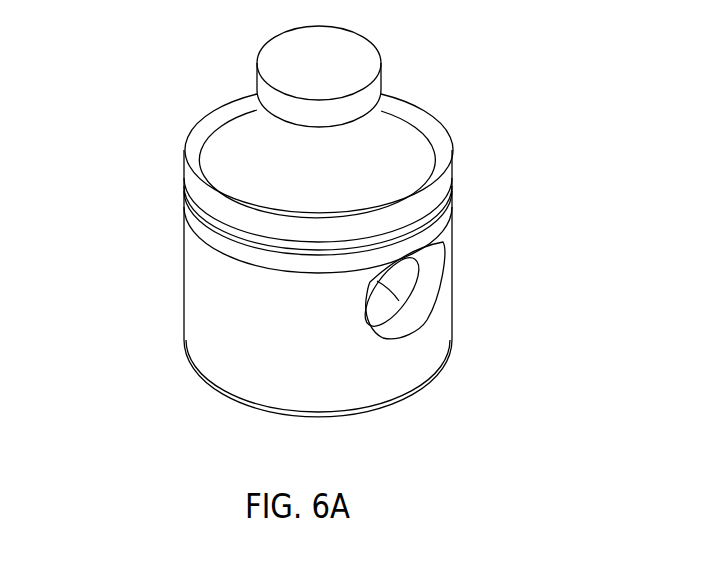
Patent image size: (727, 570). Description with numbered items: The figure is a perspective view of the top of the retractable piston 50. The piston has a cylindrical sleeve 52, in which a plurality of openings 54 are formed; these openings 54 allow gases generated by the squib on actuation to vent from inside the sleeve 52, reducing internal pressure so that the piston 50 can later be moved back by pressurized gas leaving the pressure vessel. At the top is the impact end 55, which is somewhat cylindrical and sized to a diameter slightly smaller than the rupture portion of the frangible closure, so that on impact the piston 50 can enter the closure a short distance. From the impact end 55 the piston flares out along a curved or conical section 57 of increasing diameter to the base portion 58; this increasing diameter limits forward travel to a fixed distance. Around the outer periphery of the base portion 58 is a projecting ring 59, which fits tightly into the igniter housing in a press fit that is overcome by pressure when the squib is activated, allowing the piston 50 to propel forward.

The retractable piston 50 is at (180, 180).
The cylindrical sleeve 52 is at (197, 318).
The openings 54 is at (390, 305).
The impact end 55 is at (278, 72).
The curved or conical section 57 is at (403, 125).
The base portion 58 is at (450, 153).
The projecting ring 59 is at (450, 213).